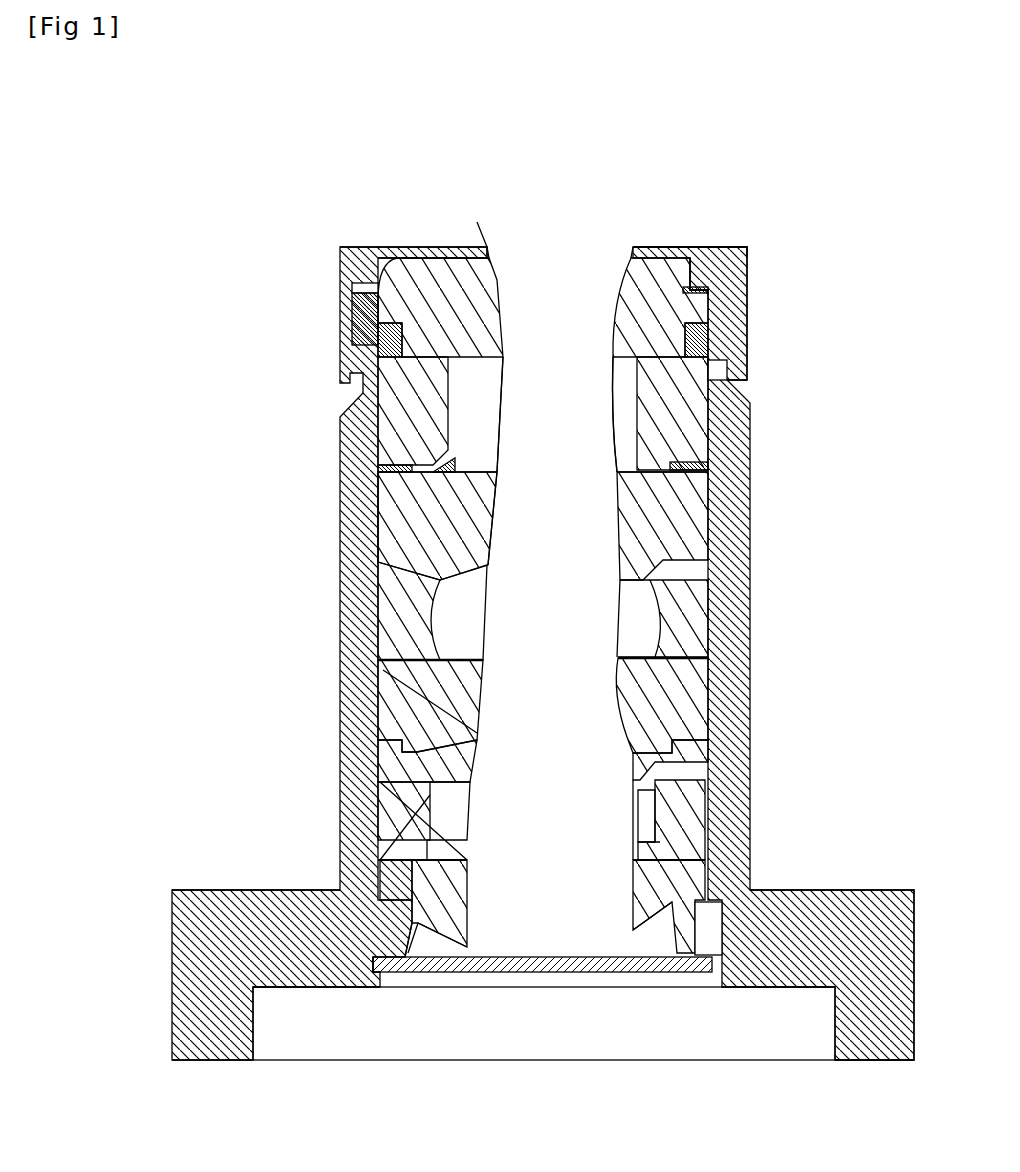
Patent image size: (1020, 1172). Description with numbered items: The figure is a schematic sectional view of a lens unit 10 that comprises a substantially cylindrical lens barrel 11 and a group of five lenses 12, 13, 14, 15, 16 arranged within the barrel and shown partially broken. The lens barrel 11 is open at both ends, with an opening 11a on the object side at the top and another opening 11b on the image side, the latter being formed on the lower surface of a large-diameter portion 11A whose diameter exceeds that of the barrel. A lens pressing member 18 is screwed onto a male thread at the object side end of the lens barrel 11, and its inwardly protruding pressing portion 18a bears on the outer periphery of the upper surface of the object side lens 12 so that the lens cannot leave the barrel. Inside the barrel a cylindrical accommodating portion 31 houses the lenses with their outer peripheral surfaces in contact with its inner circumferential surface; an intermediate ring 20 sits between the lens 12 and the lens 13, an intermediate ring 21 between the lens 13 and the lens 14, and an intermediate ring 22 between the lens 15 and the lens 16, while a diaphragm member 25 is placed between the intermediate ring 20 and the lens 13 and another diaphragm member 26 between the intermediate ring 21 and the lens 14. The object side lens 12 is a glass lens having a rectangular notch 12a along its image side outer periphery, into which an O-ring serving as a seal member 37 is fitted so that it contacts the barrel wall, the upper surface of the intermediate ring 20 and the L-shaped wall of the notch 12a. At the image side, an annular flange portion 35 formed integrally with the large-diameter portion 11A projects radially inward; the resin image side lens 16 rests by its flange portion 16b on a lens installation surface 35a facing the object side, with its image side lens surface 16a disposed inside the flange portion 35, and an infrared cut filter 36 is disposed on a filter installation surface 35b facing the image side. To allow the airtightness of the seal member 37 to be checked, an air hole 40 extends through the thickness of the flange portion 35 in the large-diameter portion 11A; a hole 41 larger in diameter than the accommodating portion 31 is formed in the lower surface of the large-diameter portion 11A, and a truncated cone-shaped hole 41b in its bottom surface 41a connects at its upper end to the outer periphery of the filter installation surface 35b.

The lens unit 10 is at (547, 224).
The lens barrel 11 is at (752, 602).
The large-diameter portion 11A is at (863, 892).
The opening 11a is at (397, 277).
The opening 11b is at (435, 1060).
The object side lens 12 is at (633, 245).
The notch 12a is at (352, 305).
The lens 13 is at (680, 515).
The lens 14 is at (688, 705).
The lens 15 is at (660, 763).
The image side lens 16 is at (380, 838).
The lens surface 16a is at (460, 945).
The flange portion 16b is at (687, 880).
The lens pressing member 18 is at (735, 295).
The pressing portion 18a is at (707, 257).
The intermediate ring 20 is at (680, 415).
The intermediate ring 21 is at (385, 612).
The intermediate ring 22 is at (688, 820).
The diaphragm member 25 is at (455, 467).
The diaphragm member 26 is at (455, 657).
The accommodating portion 31 is at (397, 520).
The flange portion 35 is at (388, 975).
The lens installation surface 35a is at (388, 875).
The filter installation surface 35b is at (408, 960).
The infrared cut filter 36 is at (558, 972).
The seal member 37 is at (352, 350).
The air hole 40 is at (703, 958).
The hole 41 is at (253, 1022).
The bottom surface 41a is at (772, 987).
The truncated cone-shaped hole 41b is at (397, 985).